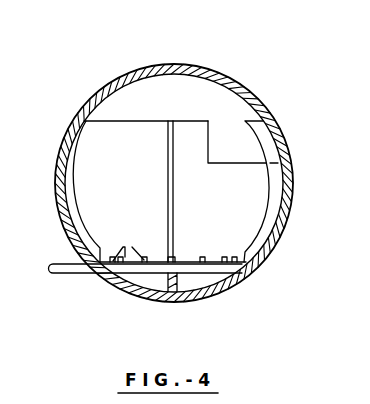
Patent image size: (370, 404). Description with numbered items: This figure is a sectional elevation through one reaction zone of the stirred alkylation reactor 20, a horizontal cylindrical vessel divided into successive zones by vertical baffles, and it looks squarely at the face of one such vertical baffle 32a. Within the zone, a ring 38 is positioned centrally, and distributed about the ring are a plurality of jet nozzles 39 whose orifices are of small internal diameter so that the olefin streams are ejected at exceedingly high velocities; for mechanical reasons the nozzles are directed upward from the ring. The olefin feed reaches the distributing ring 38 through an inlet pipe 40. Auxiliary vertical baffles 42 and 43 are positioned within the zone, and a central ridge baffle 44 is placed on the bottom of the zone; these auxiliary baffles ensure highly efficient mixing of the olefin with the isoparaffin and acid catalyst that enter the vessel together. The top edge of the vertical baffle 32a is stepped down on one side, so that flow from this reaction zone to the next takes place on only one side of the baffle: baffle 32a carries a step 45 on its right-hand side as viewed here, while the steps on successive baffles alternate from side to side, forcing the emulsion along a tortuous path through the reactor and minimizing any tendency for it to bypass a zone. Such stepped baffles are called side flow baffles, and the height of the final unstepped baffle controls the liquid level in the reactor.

The reactor 20 is at (247, 275).
The vertical baffle 32a is at (134, 125).
The ring 38 is at (192, 262).
The jet nozzles 39 is at (125, 254).
The inlet pipe 40 is at (75, 274).
The auxiliary vertical baffle 42 is at (177, 188).
The auxiliary vertical baffle 43 is at (76, 167).
The central ridge baffle 44 is at (178, 279).
The step 45 is at (220, 163).